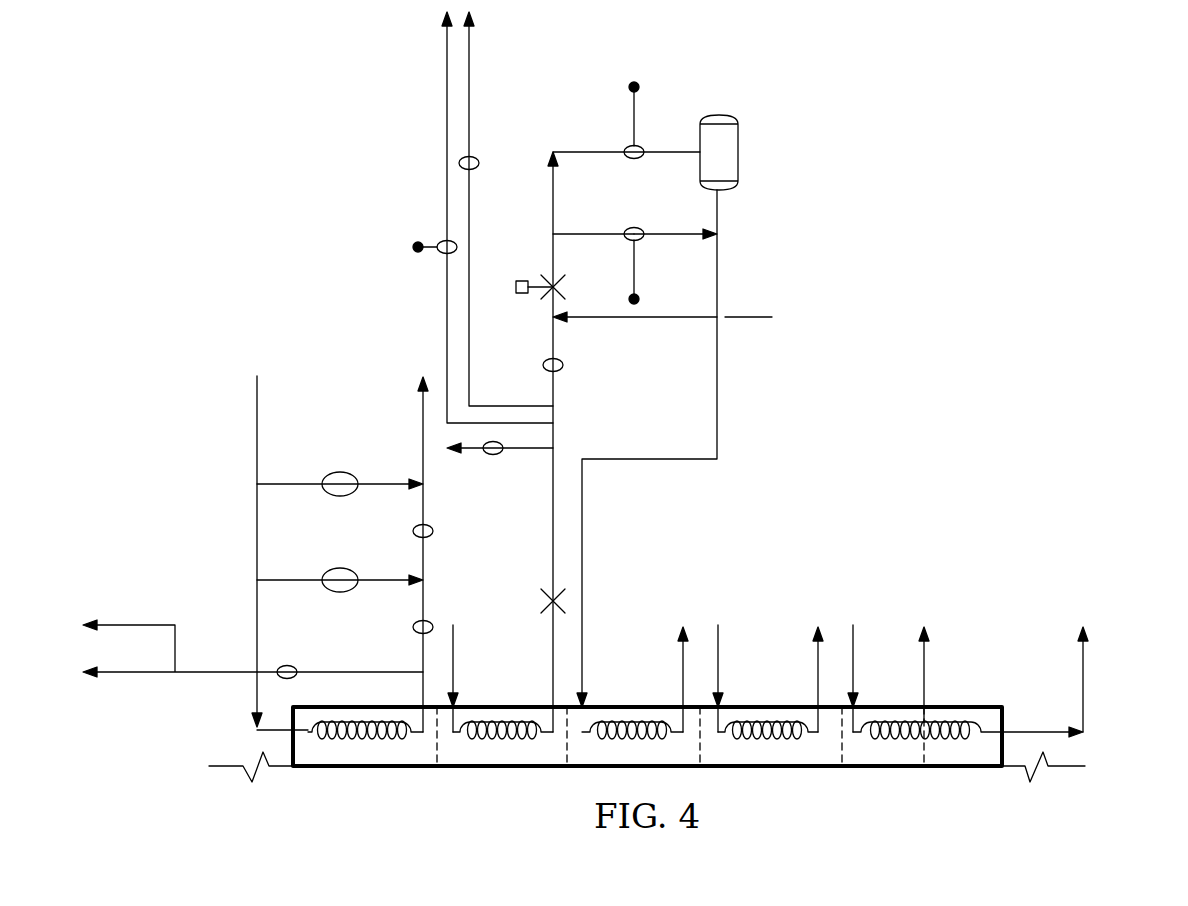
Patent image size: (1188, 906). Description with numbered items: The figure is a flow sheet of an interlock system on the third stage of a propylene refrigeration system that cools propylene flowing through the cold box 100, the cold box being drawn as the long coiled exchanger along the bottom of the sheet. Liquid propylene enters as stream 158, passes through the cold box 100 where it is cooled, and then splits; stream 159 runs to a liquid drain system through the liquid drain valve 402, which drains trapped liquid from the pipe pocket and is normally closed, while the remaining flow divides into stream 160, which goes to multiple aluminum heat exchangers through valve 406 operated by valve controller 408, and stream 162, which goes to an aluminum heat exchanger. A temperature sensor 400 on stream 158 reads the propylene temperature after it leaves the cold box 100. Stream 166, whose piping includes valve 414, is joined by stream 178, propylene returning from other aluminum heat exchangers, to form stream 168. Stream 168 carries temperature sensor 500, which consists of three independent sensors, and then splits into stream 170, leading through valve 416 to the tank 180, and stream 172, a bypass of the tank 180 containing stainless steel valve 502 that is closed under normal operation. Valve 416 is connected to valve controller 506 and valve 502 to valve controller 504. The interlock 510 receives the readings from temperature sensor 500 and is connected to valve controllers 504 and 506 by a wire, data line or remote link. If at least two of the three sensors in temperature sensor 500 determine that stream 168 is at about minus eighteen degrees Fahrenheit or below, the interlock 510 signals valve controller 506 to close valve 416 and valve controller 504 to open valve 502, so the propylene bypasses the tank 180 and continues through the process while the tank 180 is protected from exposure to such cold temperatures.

The cold box 100 is at (960, 702).
The stream 158 is at (455, 663).
The stream 159 is at (472, 450).
The stream 160 is at (447, 76).
The stream 162 is at (469, 76).
The stream 166 is at (556, 330).
The stream 168 is at (556, 246).
The stream 170 is at (553, 190).
The stream 172 is at (675, 233).
The stream 178 is at (750, 317).
The tank 180 is at (740, 136).
The temperature sensor 400 is at (540, 612).
The liquid drain valve 402 is at (498, 453).
The valve 406 is at (440, 253).
The valve controller 408 is at (418, 241).
The valve 414 is at (563, 367).
The valve 416 is at (628, 150).
The temperature sensor 500 is at (547, 300).
The valve 502 is at (628, 231).
The valve controller 504 is at (640, 297).
The valve controller 506 is at (640, 87).
The interlock 510 is at (522, 281).